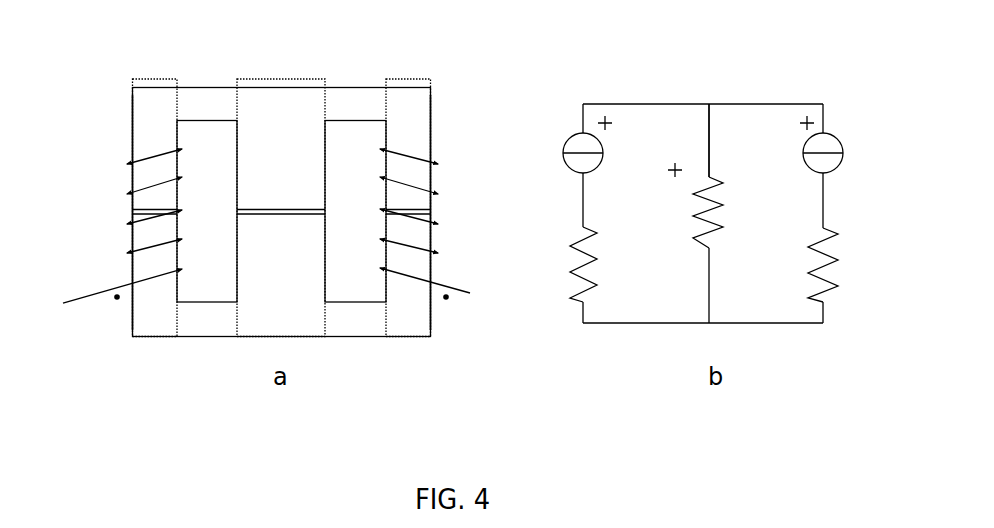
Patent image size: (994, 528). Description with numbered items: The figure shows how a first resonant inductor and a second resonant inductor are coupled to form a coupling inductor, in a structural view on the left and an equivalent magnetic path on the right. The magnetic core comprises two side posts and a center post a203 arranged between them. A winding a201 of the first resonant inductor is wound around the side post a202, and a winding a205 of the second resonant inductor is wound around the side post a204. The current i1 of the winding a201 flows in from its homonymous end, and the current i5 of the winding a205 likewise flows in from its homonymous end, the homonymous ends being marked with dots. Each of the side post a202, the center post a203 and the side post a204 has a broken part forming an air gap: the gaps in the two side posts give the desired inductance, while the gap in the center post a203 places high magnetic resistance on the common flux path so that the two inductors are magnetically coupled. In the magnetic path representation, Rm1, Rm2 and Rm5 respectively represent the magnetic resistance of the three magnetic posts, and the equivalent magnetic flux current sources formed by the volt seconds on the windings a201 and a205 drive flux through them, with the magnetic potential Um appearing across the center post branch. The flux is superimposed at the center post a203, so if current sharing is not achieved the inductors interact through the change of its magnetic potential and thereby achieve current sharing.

The winding of the first resonant inductor a201 is at (133, 137).
The side post a202 is at (157, 78).
The center post a203 is at (282, 78).
The side post a204 is at (408, 78).
The winding of the second resonant inductor a205 is at (430, 137).
The current of the winding of the first resonant inductor i1 is at (113, 271).
The current of the winding of the second resonant inductor i5 is at (448, 270).
The magnetic potential difference across central column Um is at (662, 190).
The magnetic resistance Rm1 is at (609, 264).
The magnetic resistance Rm2 is at (735, 212).
The magnetic resistance Rm5 is at (850, 265).